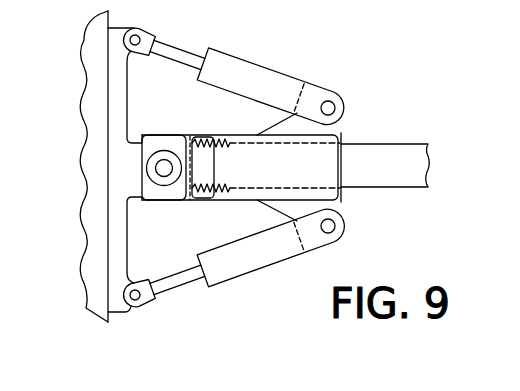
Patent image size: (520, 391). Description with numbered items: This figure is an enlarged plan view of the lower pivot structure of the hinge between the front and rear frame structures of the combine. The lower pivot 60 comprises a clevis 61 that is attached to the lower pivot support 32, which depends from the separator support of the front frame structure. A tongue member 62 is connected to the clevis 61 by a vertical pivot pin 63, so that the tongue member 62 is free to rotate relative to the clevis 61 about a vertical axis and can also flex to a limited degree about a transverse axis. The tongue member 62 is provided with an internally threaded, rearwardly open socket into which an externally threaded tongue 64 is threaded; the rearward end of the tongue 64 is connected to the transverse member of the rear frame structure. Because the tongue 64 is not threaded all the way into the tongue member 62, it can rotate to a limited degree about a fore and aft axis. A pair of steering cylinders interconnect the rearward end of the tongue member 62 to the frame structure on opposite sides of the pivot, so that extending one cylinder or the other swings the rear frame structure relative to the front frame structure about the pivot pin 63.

The lower pivot support 32 is at (84, 31).
The lower pivot 60 is at (152, 213).
The clevis 61 is at (133, 112).
The tongue member 62 is at (183, 137).
The vertical pivot pin 63 is at (164, 166).
The externally threaded tongue 64 is at (381, 146).